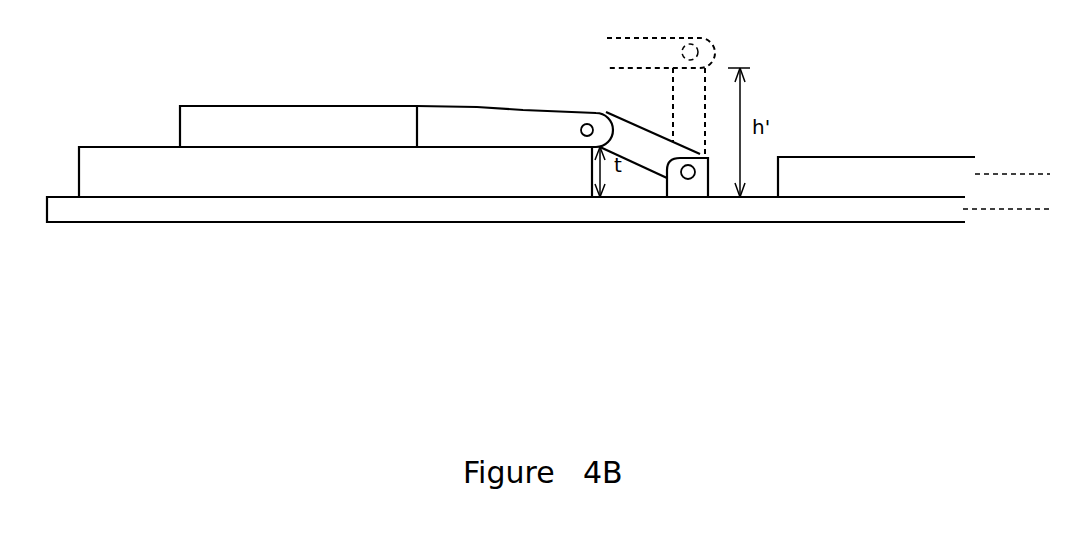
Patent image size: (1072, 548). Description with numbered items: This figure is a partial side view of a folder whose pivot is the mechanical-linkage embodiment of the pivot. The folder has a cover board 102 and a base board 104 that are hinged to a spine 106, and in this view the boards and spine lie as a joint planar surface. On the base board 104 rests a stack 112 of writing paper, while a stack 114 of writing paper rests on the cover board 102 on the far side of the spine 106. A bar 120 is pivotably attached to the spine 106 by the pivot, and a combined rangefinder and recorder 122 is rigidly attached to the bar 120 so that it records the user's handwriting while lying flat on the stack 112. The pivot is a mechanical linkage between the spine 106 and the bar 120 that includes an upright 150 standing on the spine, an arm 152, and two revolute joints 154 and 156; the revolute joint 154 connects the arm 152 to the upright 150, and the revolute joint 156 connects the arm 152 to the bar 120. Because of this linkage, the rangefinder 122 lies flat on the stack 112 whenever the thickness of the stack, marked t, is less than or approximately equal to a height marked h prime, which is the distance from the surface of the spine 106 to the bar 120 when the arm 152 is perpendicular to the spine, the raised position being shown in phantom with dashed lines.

The cover board 102 is at (845, 222).
The base board 104 is at (305, 222).
The spine 106 is at (678, 222).
The stack of writing paper 112 is at (335, 172).
The stack of writing paper 114 is at (923, 168).
The bar 120 is at (515, 126).
The combined rangefinder and recorder 122 is at (298, 126).
The upright 150 is at (687, 177).
The arm 152 is at (650, 145).
The revolute joint 154 is at (692, 167).
The revolute joint 156 is at (587, 124).